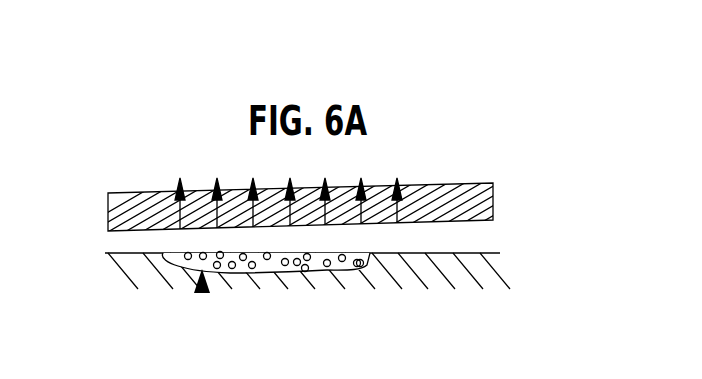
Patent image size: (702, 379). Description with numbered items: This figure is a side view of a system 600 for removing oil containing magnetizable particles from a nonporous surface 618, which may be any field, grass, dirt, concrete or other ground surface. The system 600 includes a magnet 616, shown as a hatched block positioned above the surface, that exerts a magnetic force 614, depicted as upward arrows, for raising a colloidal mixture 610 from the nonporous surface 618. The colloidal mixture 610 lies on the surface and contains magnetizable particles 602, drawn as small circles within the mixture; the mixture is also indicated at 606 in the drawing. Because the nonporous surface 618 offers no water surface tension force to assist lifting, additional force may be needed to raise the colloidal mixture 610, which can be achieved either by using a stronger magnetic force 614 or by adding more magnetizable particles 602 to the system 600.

The system 600 is at (128, 137).
The magnetizable particles 602 is at (360, 266).
The bonding layer with voids 606 is at (273, 266).
The colloidal mixture 610 is at (201, 294).
The magnetic force 614 is at (166, 194).
The magnet 616 is at (453, 200).
The nonporous surface 618 is at (487, 265).